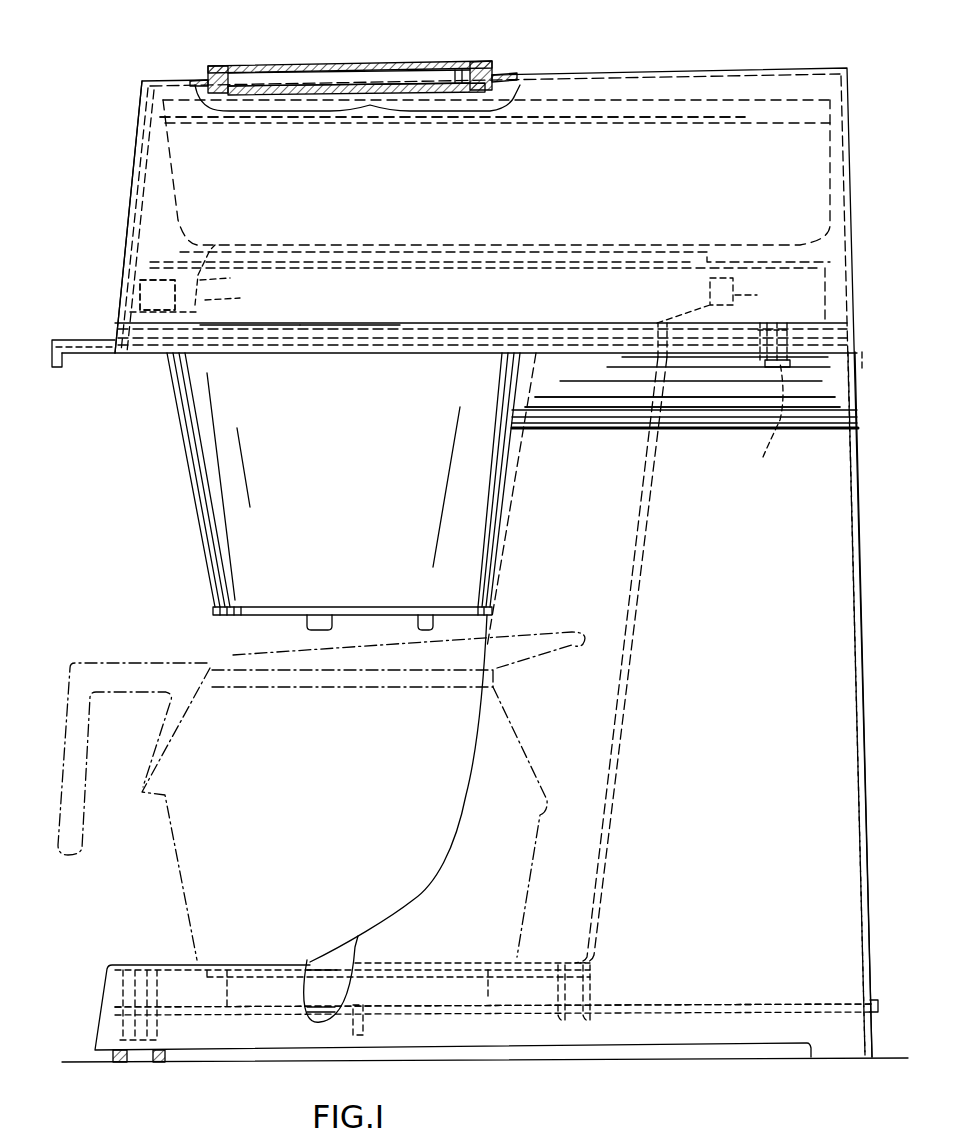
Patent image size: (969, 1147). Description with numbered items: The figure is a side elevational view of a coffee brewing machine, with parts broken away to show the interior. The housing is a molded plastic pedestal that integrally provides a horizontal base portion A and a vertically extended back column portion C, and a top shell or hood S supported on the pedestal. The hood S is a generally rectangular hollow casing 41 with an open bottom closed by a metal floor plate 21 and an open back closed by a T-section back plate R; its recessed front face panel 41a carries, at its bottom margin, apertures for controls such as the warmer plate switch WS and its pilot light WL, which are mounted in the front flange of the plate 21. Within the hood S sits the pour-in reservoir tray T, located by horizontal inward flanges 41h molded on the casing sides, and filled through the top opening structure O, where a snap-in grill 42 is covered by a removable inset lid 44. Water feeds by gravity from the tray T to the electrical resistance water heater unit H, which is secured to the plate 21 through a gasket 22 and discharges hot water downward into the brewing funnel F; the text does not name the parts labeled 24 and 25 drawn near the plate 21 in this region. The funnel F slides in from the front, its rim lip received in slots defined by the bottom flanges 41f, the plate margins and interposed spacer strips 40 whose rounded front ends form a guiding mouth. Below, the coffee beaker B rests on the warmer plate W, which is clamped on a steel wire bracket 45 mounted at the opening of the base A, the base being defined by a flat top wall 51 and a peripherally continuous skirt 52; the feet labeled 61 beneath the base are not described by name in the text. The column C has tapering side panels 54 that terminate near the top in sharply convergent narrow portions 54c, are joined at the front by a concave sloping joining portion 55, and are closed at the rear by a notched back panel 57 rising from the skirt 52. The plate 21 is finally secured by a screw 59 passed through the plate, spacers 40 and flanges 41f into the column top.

The casing 41 is at (803, 132).
The front face panel 41a is at (136, 186).
The inward flanges 41h is at (708, 120).
The bottom flanges 41f is at (710, 428).
The grill element 42 is at (460, 70).
The inset lid 44 is at (408, 62).
The spacer strips 40 is at (106, 350).
The floor plate 21 is at (752, 330).
The gasket 22 is at (228, 325).
The water conduit 24 is at (210, 262).
The shelf plate 25 is at (312, 325).
The side panels 54 is at (755, 696).
The narrow portions 54c is at (610, 407).
The joining portion 55 is at (615, 755).
The back panel 57 is at (866, 760).
The screw 59 is at (779, 414).
The warmer plate support bracket 45 is at (667, 1004).
The top wall 51 is at (168, 963).
The skirt 52 is at (498, 1033).
The feet 61 is at (168, 1055).
The hood S is at (830, 62).
The back plate R is at (850, 206).
The column portion C is at (876, 598).
The top opening structure O is at (292, 62).
The reservoir tray T is at (168, 150).
The water heater unit H is at (566, 262).
The brewing funnel F is at (182, 460).
The warmer plate W is at (327, 962).
The beaker B is at (210, 659).
The base portion A is at (128, 963).
The warmer plate switch WS is at (150, 290).
The pilot light WL is at (150, 312).